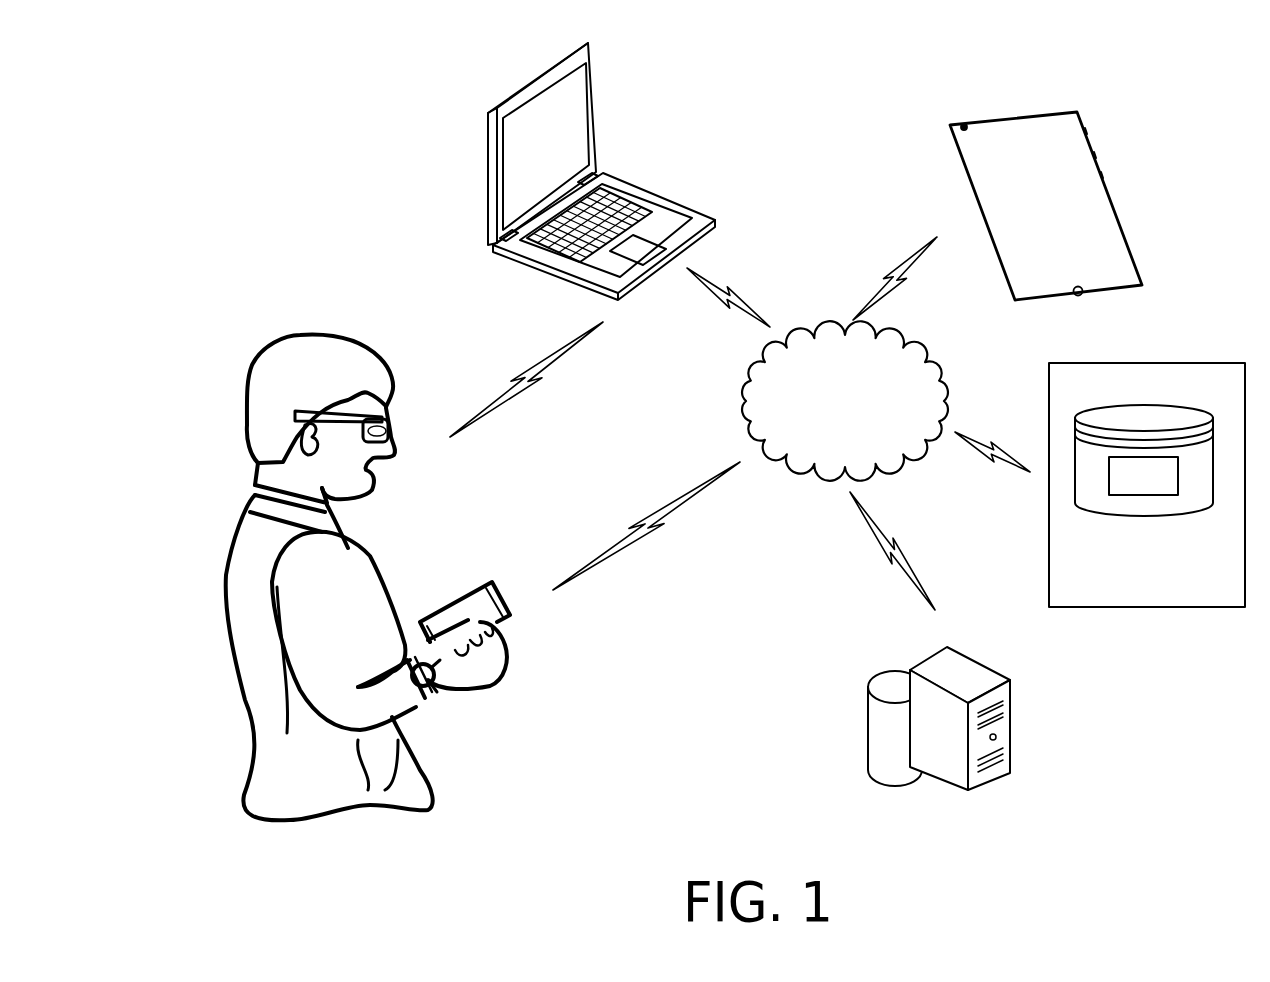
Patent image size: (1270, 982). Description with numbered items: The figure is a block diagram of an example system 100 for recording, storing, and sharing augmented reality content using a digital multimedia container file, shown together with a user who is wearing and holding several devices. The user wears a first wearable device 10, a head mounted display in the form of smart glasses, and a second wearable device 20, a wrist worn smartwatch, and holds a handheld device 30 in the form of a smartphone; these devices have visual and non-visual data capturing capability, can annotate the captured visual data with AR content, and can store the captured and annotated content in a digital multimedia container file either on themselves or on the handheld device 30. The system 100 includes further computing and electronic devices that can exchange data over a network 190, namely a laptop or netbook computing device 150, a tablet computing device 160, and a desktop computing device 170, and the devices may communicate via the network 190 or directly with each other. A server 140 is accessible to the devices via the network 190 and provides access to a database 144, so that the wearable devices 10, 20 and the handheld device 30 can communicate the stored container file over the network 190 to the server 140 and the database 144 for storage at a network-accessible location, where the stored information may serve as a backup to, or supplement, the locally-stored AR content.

The system 100 is at (768, 31).
The first wearable device 10 is at (396, 416).
The second wearable device 20 is at (446, 700).
The handheld device 30 is at (522, 616).
The laptop or netbook computing device 150 is at (687, 213).
The tablet computing device 160 is at (980, 118).
The server 140 is at (1228, 394).
The database 144 is at (1160, 489).
The desktop computing device 170 is at (975, 678).
The network 190 is at (828, 424).